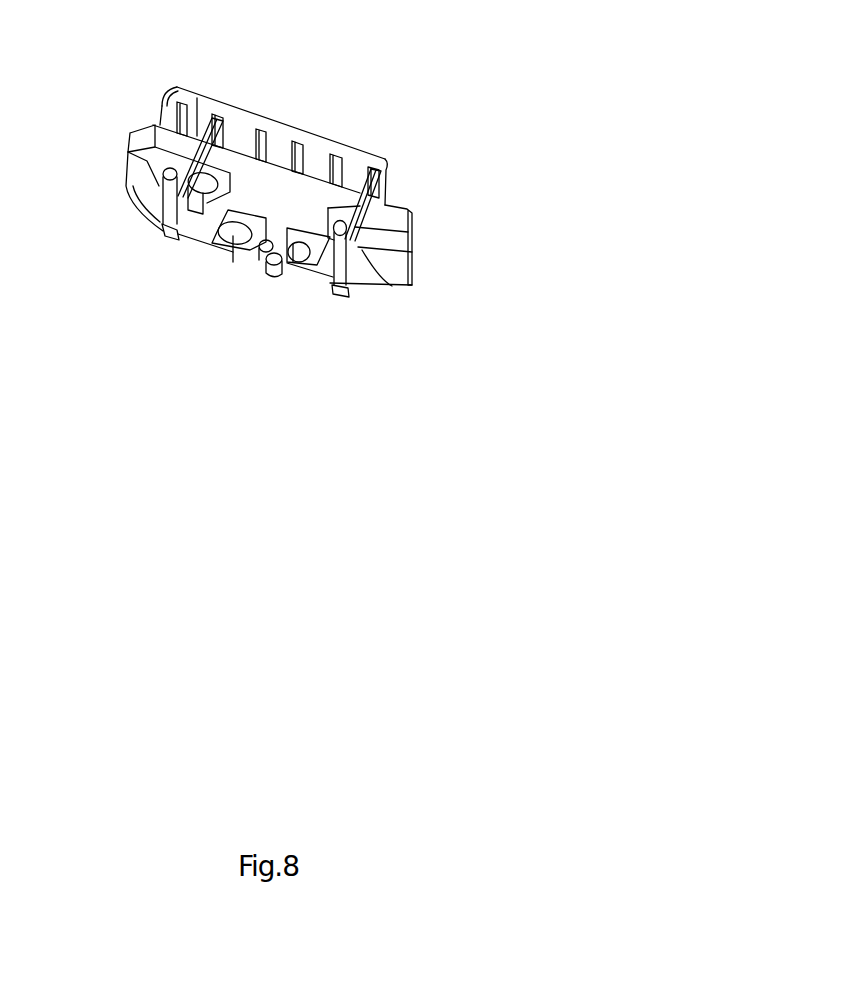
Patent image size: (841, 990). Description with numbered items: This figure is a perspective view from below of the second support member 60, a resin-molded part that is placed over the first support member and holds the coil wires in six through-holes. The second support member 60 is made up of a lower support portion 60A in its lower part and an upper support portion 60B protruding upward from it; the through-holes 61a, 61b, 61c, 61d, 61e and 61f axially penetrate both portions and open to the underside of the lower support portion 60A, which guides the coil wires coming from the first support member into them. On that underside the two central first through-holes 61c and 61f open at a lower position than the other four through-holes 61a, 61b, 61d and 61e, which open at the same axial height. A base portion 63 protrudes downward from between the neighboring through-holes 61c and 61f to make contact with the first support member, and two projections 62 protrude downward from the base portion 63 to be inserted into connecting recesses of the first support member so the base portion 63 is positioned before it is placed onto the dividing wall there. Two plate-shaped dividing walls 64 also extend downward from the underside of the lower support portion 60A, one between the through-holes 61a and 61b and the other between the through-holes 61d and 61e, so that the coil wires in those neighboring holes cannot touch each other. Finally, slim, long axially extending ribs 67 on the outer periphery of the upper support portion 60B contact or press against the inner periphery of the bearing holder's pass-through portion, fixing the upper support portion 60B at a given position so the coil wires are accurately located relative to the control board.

The second support member 60 is at (281, 220).
The lower support portion 60A is at (408, 233).
The upper support portion 60B is at (383, 164).
The through-hole 61a is at (188, 236).
The through-hole 61b is at (128, 205).
The through-hole 61c is at (233, 262).
The through-hole 61d is at (392, 286).
The through-hole 61e is at (412, 266).
The through-hole 61f is at (297, 280).
The projections 62 is at (267, 293).
The base portion 63 is at (288, 264).
The dividing walls 64 is at (205, 123).
The ribs 67 is at (303, 147).